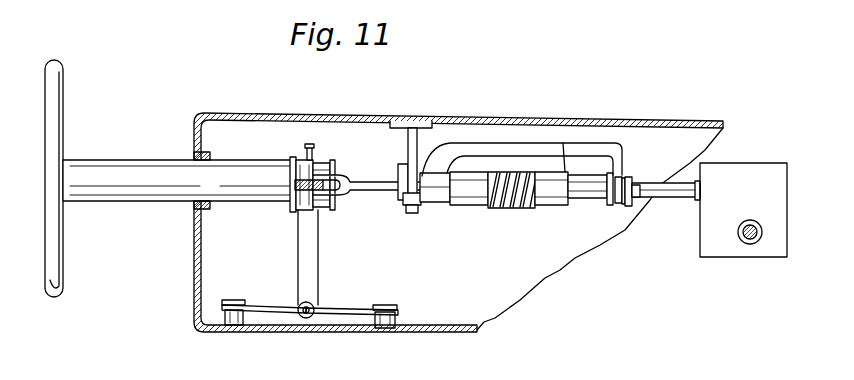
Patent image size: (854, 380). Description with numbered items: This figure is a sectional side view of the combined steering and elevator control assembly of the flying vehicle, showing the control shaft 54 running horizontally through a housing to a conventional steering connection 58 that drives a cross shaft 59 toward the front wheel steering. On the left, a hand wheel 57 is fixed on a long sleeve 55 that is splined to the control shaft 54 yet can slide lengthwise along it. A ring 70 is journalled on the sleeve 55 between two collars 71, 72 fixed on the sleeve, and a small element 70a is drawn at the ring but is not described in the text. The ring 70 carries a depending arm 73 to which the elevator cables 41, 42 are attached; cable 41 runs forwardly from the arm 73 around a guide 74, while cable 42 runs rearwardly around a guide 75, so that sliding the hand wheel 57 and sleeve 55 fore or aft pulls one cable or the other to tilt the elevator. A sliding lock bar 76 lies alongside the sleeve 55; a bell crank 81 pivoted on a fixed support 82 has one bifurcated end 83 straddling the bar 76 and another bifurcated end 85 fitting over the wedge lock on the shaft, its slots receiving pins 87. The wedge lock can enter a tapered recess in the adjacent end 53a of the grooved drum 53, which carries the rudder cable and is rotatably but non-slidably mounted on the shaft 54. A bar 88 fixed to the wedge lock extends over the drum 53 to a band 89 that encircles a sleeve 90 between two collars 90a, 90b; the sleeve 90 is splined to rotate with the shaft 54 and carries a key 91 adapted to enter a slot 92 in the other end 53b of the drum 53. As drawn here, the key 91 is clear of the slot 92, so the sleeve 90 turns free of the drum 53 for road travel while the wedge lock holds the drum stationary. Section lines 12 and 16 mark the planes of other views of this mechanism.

The hand wheel 57 is at (70, 97).
The sleeve 55 is at (140, 160).
The sliding lock bar 76 is at (291, 196).
The ring 70 is at (300, 209).
The stud 70a is at (308, 147).
The collar 71 is at (292, 170).
The collar 72 is at (332, 160).
The end of bell crank 83 is at (346, 176).
The bell crank 81 is at (386, 190).
The other end of bell crank 85 is at (398, 172).
The fixed support 82 is at (405, 130).
The pins 87 is at (408, 214).
The grooved drum 53 is at (498, 210).
The end of drum 53a is at (463, 208).
The end of drum 53b is at (548, 208).
The cross shaft 59 is at (512, 208).
The key 91 is at (592, 183).
The sleeve 90 is at (608, 196).
The collar 90a is at (618, 204).
The collar 90b is at (624, 206).
The band 89 is at (628, 208).
The control shaft 54 is at (668, 198).
The steering connection 58 is at (750, 168).
The bar 88 is at (592, 155).
The slot 92 is at (555, 150).
The section line 16 is at (545, 165).
The section line 12 is at (412, 101).
The depending arm 73 is at (298, 247).
The elevator cable 42 is at (265, 305).
The elevator cable 41 is at (342, 307).
The guide 75 is at (232, 300).
The guide 74 is at (400, 300).